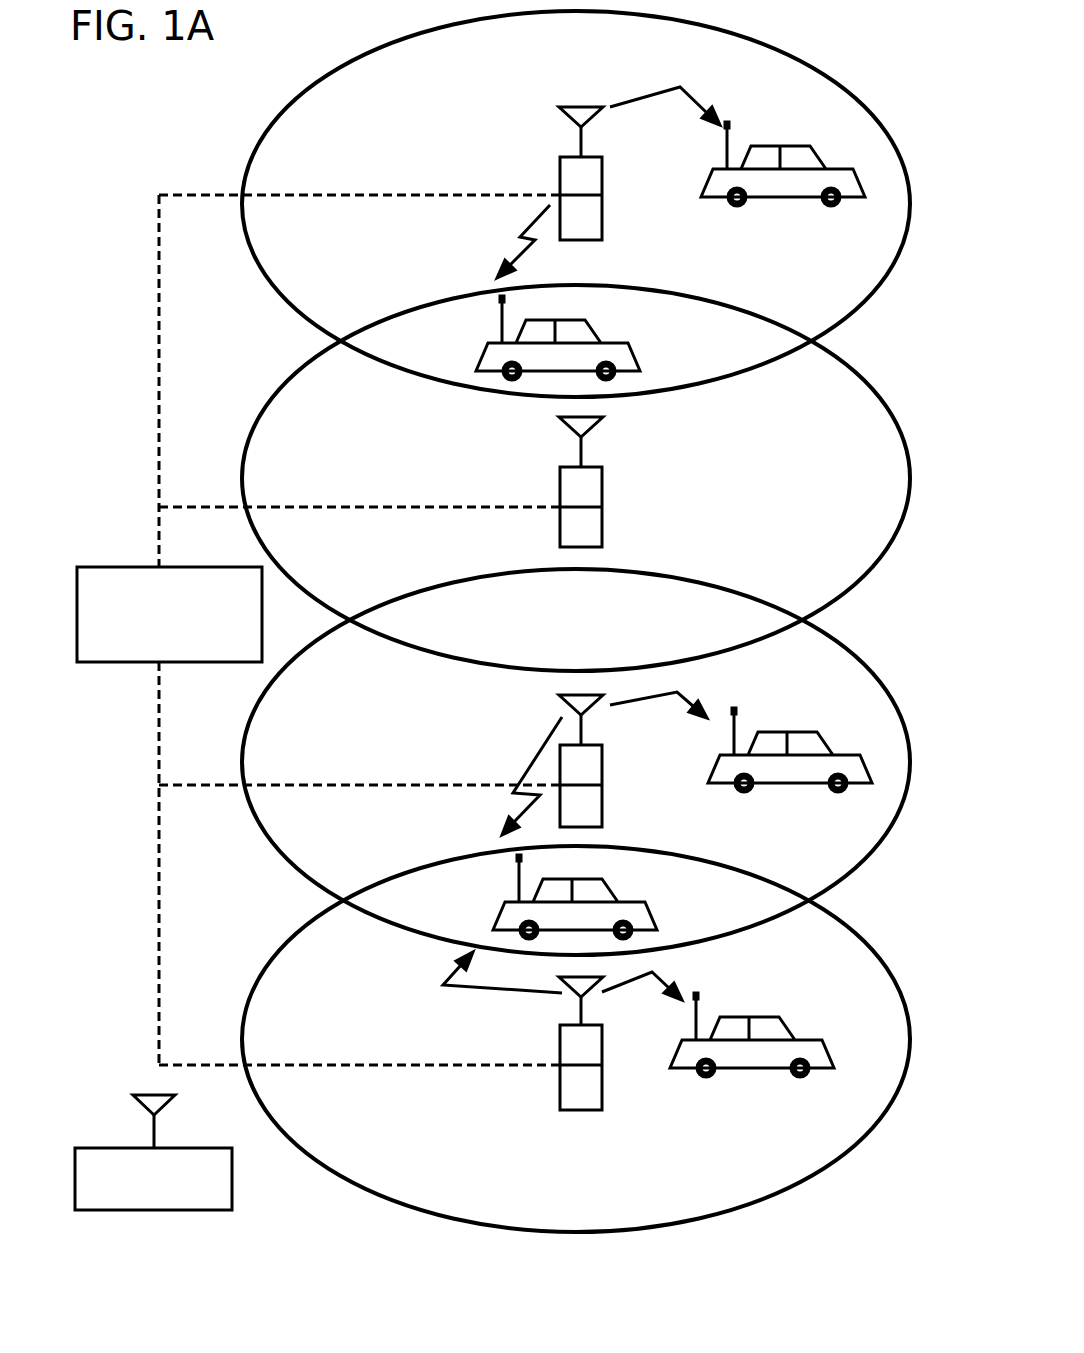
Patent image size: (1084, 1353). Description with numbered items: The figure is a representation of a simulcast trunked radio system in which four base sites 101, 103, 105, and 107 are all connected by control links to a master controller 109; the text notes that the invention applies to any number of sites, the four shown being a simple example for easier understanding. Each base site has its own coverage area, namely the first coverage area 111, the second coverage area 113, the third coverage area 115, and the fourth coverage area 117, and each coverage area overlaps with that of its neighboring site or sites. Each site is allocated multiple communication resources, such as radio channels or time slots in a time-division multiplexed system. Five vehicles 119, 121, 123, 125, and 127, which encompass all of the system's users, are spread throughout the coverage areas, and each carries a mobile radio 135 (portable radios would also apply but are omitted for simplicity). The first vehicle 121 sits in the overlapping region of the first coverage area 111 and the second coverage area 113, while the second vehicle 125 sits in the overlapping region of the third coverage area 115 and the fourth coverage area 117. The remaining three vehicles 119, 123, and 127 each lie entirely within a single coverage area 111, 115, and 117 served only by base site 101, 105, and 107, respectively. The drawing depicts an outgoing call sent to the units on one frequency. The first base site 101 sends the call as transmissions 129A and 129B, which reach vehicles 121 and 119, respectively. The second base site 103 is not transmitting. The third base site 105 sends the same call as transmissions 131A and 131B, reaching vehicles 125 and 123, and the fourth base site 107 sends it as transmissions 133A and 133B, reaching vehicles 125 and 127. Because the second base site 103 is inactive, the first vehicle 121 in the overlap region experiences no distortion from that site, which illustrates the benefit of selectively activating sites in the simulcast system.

The first base site 101 is at (587, 238).
The second base site 103 is at (603, 507).
The third base site 105 is at (602, 783).
The fourth base site 107 is at (597, 1110).
The master controller 109 is at (142, 565).
The first coverage area 111 is at (288, 108).
The second coverage area 113 is at (285, 377).
The third coverage area 115 is at (285, 862).
The fourth coverage area 117 is at (287, 938).
The vehicle 119 is at (785, 147).
The first vehicle 121 is at (560, 320).
The vehicle 123 is at (795, 732).
The second vehicle 125 is at (577, 880).
The vehicle 127 is at (758, 1018).
The call transmission 129A is at (525, 238).
The call transmission 129B is at (653, 93).
The call transmission 131A is at (535, 760).
The call transmission 131B is at (633, 703).
The call transmission 133A is at (493, 992).
The call transmission 133B is at (658, 993).
The mobile radio 135 is at (232, 1185).